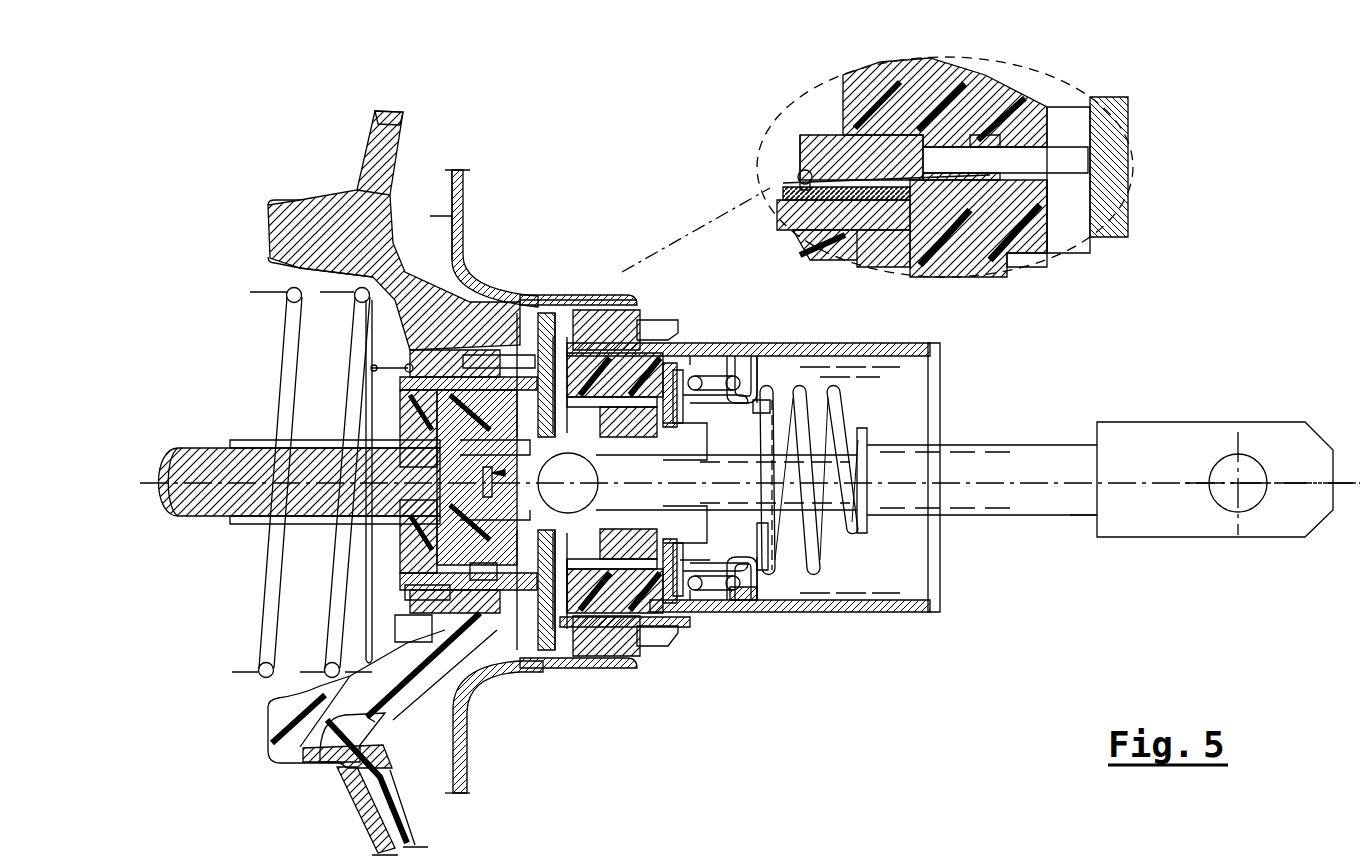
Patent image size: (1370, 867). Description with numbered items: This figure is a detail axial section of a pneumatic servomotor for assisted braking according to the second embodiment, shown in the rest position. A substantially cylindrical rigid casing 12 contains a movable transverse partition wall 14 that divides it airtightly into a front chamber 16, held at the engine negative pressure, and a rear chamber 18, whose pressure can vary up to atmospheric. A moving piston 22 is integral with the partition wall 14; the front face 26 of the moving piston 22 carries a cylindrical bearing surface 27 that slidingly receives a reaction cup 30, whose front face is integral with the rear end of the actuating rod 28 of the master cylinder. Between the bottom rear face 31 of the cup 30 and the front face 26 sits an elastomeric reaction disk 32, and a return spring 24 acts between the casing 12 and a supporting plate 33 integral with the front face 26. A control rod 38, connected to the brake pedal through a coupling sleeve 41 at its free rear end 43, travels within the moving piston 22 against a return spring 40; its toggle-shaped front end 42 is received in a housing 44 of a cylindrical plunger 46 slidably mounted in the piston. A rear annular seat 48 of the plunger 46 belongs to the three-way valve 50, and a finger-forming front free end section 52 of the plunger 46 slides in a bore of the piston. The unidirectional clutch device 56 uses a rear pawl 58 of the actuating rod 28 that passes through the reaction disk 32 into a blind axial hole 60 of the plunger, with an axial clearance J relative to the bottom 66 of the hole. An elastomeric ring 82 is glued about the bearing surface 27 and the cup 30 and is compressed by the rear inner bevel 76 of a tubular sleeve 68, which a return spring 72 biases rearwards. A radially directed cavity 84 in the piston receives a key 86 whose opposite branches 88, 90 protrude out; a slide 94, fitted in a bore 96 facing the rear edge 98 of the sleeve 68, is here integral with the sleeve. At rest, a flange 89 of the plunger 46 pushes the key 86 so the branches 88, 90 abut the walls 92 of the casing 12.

The rigid casing 12 is at (468, 195).
The transverse partition wall 14 is at (400, 128).
The front chamber 16 is at (390, 483).
The rear chamber 18 is at (465, 222).
The moving piston 22 is at (270, 251).
The return spring 24 is at (290, 318).
The front face of the moving piston 26 is at (370, 330).
The cylindrical bearing surface 27 is at (450, 615).
The actuating rod 28 is at (198, 452).
The cup 30 is at (395, 620).
The bottom rear face of the cup 31 is at (420, 545).
The reaction disk 32 is at (440, 394).
The supporting plate 33 is at (340, 685).
The control rod 38 is at (1078, 518).
The return spring 40 is at (820, 545).
The coupling sleeve 41 is at (1215, 435).
The front end of the control rod 42 is at (598, 483).
The free rear end of the control rod 43 is at (1072, 455).
The housing 44 is at (705, 411).
The plunger 46 is at (688, 340).
The rear annular seat 48 is at (680, 535).
The three-way valve 50 is at (695, 598).
The front free end section of the plunger 52 is at (410, 580).
The unidirectional clutch device 56 is at (396, 350).
The rear pawl 58 is at (445, 462).
The blind axial hole 60 is at (400, 535).
The bottom of the blind axial hole 66 is at (540, 483).
The tubular sleeve 68 is at (868, 130).
The return spring 72 is at (798, 177).
The rear inner bevel 76 is at (835, 165).
The ring 82 is at (980, 230).
The cavity 84 is at (612, 648).
The key 86 is at (543, 668).
The branch 88 is at (463, 692).
The flange 89 is at (530, 310).
The branch 90 is at (620, 300).
The walls 92 is at (548, 313).
The slide 94 is at (466, 357).
The bore 96 is at (1053, 148).
The rear edge of the sleeve 98 is at (988, 135).
The axial clearance J is at (509, 465).